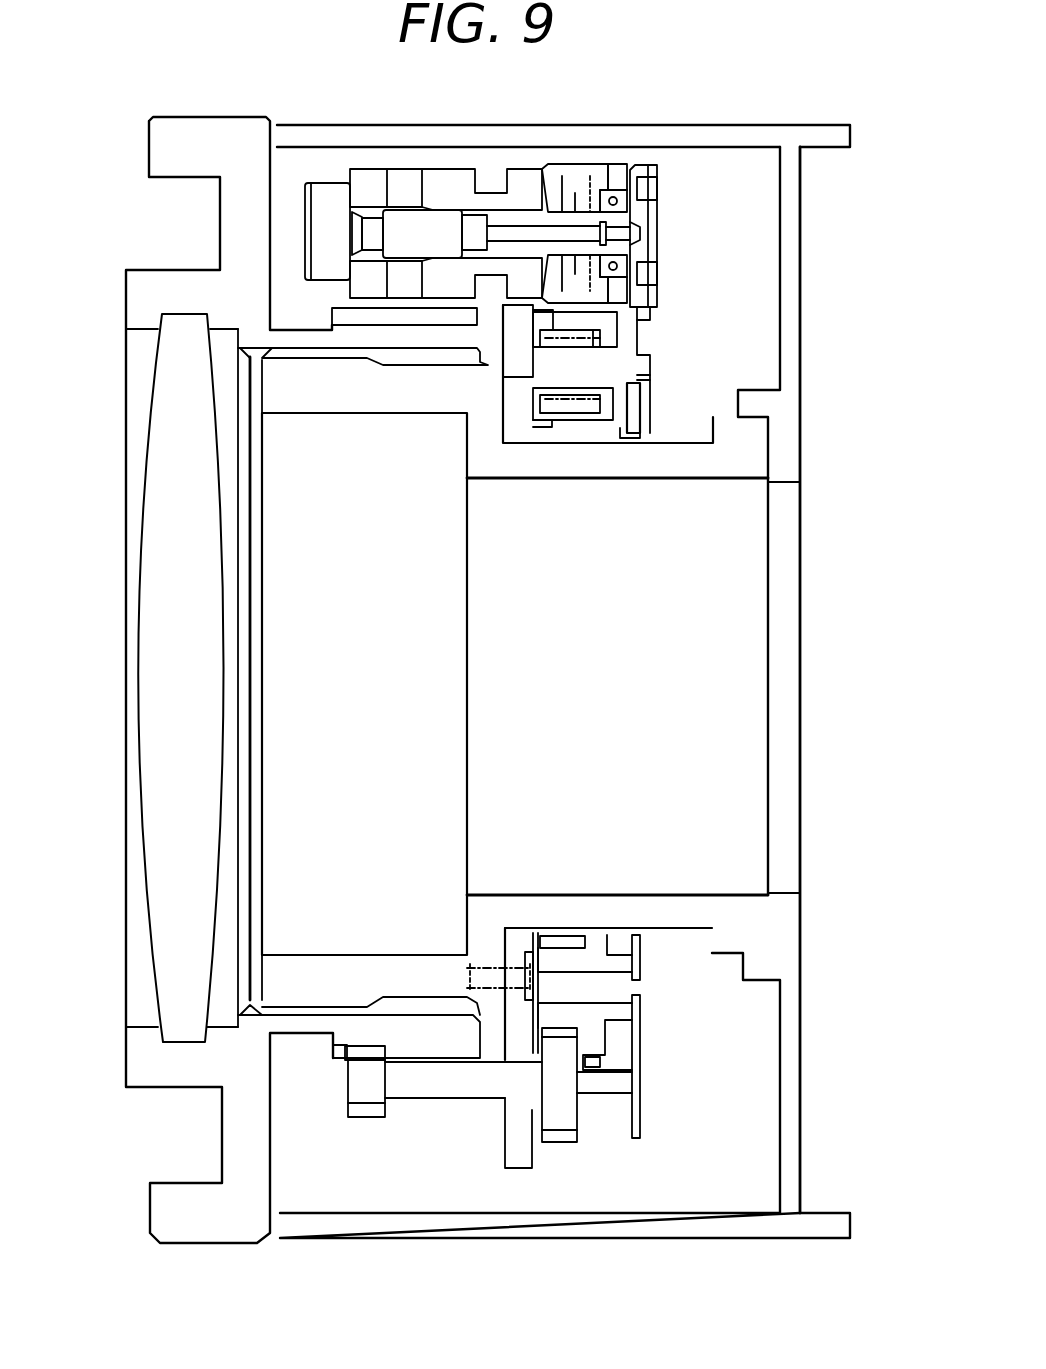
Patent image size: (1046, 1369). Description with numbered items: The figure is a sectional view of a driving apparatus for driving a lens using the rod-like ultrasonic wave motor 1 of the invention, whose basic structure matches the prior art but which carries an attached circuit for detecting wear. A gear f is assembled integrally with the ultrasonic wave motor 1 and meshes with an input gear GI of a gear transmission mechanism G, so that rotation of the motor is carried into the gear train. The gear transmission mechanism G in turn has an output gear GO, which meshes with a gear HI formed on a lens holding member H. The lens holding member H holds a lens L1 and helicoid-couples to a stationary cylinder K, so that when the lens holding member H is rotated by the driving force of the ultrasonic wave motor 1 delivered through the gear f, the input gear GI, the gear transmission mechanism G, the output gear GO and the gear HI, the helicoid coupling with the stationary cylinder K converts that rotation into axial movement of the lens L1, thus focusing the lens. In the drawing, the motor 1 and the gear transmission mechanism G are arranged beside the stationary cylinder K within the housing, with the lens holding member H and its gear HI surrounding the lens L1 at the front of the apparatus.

The vibration wave motor 1 is at (407, 170).
The gear f is at (618, 163).
The gear transmission mechanism G is at (650, 360).
The input gear GI is at (620, 415).
The output gear GO is at (360, 1116).
The lens holding member H is at (176, 1228).
The gear HI is at (333, 1062).
The stationary cylinder K is at (333, 966).
The lens L1 is at (150, 868).